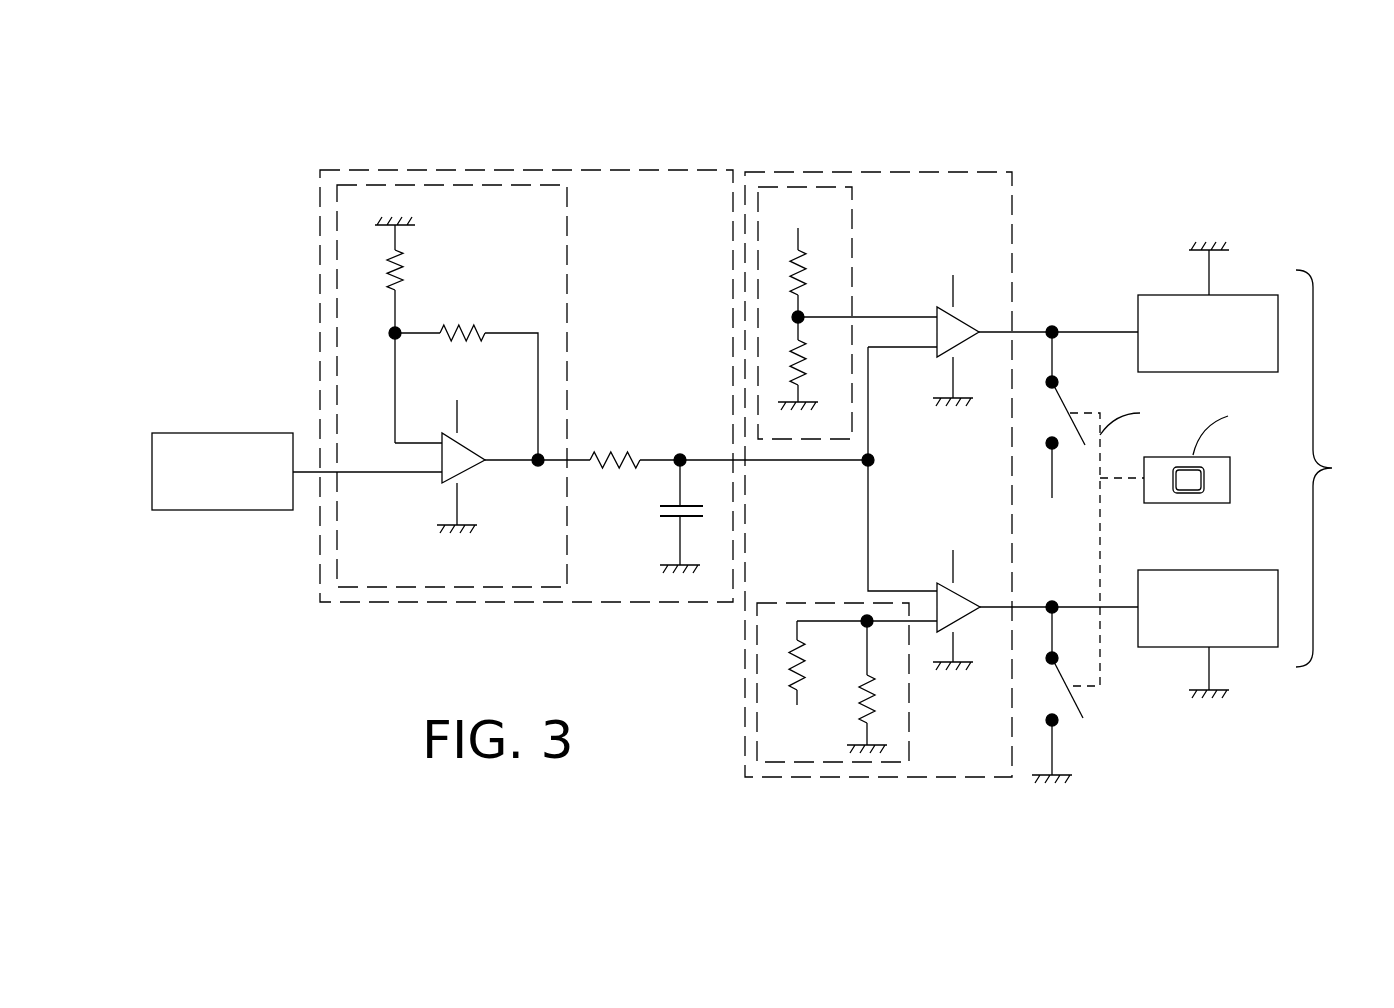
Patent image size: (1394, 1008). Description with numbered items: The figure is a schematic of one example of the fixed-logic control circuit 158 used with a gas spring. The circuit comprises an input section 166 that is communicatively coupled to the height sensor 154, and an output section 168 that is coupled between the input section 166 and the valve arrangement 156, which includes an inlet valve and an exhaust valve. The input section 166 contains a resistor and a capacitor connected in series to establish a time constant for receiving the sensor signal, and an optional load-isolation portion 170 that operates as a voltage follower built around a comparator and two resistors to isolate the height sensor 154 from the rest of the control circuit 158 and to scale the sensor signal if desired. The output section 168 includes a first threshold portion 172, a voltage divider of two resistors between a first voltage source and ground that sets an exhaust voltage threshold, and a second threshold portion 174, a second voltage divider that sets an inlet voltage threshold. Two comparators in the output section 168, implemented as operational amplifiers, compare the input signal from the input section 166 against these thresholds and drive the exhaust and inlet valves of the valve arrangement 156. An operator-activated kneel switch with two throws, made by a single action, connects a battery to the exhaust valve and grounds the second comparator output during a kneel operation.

The height sensor 154 is at (240, 430).
The valve arrangement 156 is at (1337, 466).
The fixed-logic control circuit 158 is at (554, 337).
The input section 166 is at (637, 170).
The output section 168 is at (940, 170).
The load-isolation portion 170 is at (458, 182).
The first threshold portion 172 is at (797, 183).
The second threshold portion 174 is at (817, 765).